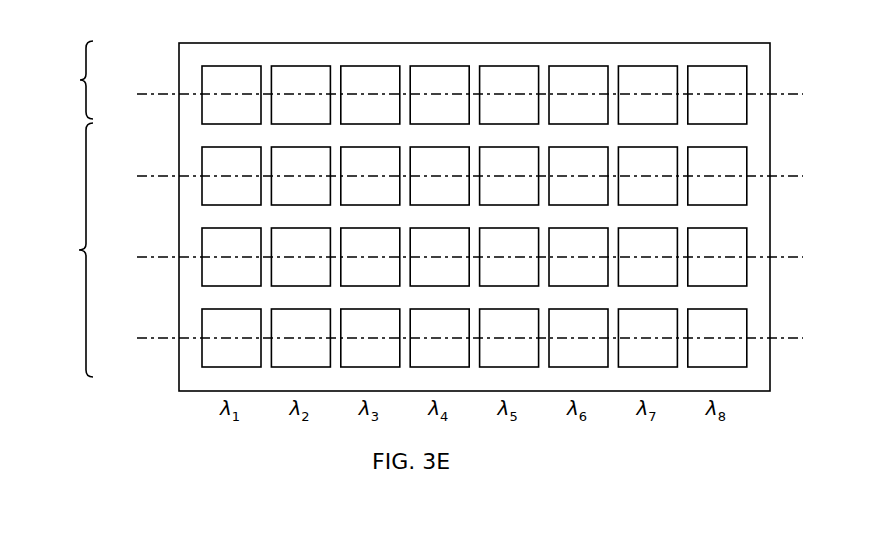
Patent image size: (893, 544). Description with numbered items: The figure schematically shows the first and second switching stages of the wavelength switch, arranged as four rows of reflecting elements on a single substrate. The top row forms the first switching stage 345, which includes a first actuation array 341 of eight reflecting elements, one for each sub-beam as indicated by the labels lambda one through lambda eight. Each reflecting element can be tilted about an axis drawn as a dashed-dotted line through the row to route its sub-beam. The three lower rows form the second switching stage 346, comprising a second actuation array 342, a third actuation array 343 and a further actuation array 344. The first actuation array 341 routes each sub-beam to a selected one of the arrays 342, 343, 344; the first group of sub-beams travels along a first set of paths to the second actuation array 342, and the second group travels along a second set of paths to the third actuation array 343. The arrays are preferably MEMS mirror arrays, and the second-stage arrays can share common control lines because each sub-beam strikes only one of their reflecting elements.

The first actuation array 341 is at (197, 77).
The second actuation array 342 is at (197, 160).
The third actuation array 343 is at (197, 241).
The actuation array 344 is at (197, 323).
The first switching stage 345 is at (64, 80).
The second switching stage 346 is at (64, 250).